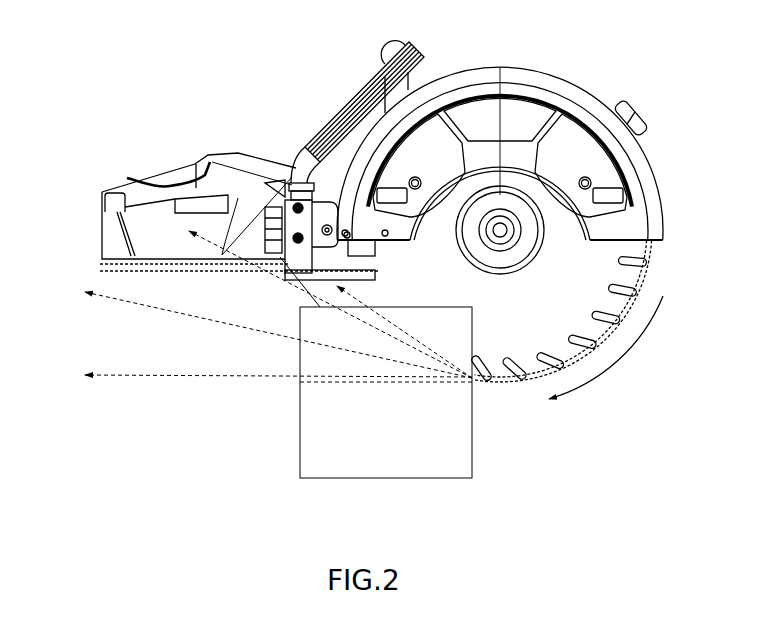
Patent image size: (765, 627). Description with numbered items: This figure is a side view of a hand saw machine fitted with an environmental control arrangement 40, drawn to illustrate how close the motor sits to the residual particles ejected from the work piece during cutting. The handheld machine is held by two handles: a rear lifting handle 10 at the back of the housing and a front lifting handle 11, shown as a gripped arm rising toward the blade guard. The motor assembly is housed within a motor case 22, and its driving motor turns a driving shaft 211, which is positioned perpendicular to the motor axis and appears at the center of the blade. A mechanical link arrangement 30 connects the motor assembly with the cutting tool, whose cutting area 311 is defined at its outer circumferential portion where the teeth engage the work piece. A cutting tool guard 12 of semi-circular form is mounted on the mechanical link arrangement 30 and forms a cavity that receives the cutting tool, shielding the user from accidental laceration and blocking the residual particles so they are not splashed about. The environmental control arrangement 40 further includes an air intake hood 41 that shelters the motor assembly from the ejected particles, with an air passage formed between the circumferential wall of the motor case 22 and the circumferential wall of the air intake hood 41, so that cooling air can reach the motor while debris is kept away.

The rear lifting handle 10 is at (168, 168).
The front lifting handle 11 is at (366, 89).
The cutting tool guard 12 is at (551, 73).
The driving shaft 211 is at (502, 230).
The motor case 22 is at (285, 230).
The mechanical link arrangement 30 is at (611, 319).
The cutting area 311 is at (643, 272).
The environmental control arrangement 40 is at (73, 346).
The air intake hood 41 is at (190, 226).